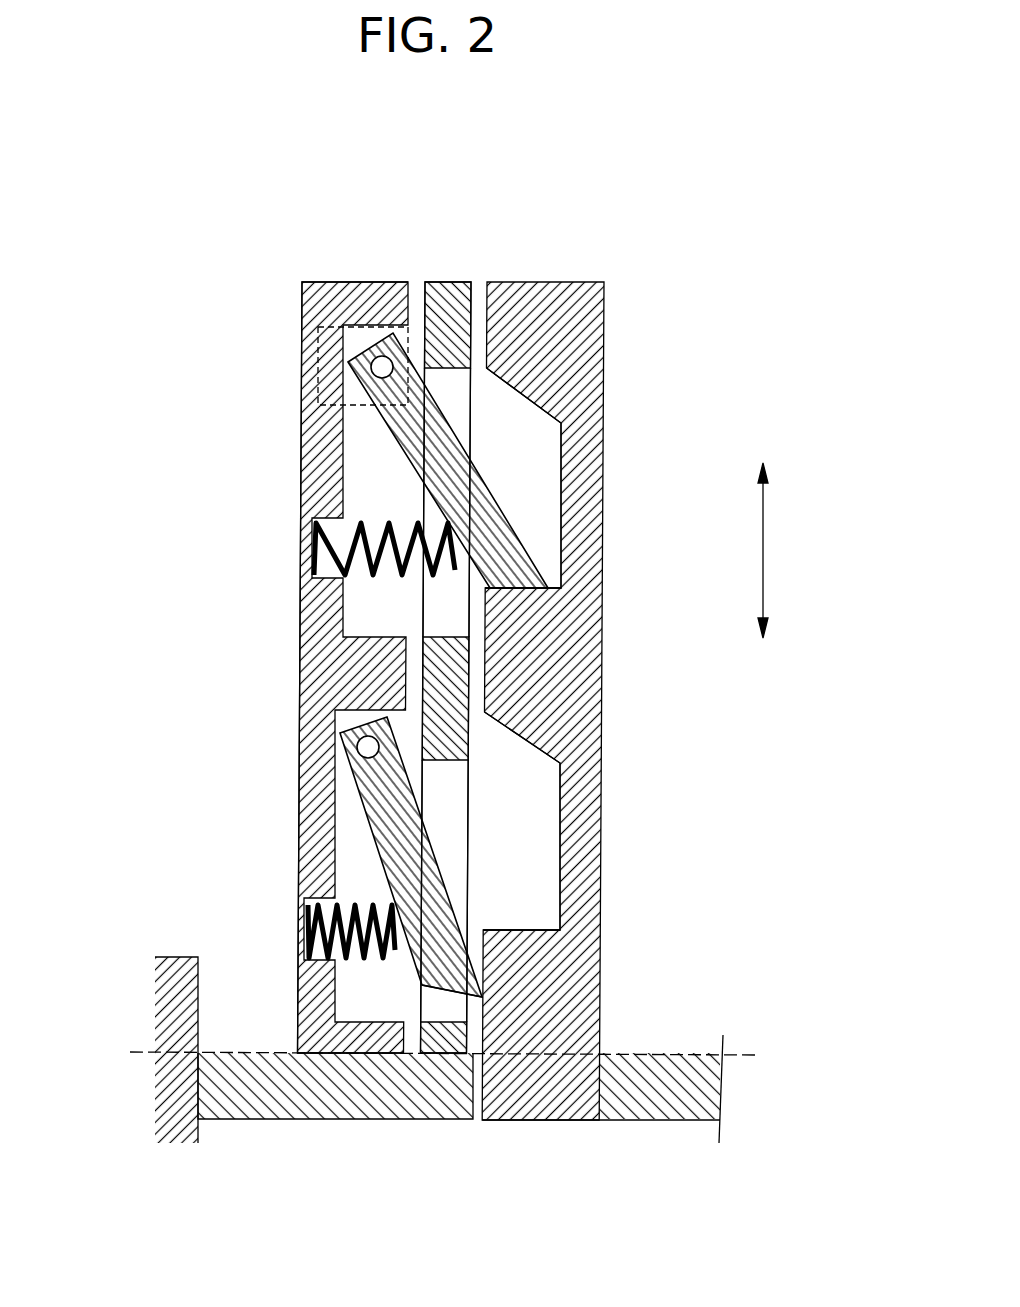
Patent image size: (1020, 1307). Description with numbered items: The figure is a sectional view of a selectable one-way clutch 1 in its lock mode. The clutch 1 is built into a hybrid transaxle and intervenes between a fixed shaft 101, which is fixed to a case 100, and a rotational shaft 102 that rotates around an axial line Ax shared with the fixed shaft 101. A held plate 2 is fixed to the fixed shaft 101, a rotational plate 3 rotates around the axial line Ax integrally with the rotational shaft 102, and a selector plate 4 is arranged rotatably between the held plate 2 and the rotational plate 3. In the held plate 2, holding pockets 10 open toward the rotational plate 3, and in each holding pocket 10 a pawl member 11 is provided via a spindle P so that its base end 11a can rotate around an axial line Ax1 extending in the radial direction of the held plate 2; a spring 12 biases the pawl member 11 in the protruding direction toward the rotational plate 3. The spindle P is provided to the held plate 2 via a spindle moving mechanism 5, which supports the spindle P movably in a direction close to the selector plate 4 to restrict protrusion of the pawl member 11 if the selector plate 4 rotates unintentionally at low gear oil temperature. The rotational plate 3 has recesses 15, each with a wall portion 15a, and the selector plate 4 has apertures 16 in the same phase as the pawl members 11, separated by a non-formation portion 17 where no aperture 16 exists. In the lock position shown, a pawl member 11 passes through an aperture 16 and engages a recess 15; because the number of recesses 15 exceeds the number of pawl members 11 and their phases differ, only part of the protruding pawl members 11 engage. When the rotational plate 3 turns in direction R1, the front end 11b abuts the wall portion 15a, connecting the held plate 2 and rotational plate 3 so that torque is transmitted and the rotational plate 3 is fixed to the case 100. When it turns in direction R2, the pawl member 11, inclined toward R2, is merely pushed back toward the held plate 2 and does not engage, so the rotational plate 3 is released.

The selectable one-way clutch 1 is at (612, 205).
The held plate 2 is at (310, 425).
The rotational plate 3 is at (593, 398).
The selector plate 4 is at (453, 300).
The spindle moving mechanism 5 is at (366, 327).
The holding pocket 10 is at (355, 478).
The pawl member 11 is at (455, 463).
The base end 11a is at (406, 350).
The front end 11b is at (524, 592).
The spring 12 is at (373, 562).
The recess 15 is at (535, 488).
The wall portion 15a is at (542, 590).
The aperture 16 is at (448, 402).
The non-formation portion 17 is at (455, 343).
The case 100 is at (205, 978).
The fixed shaft 101 is at (353, 1097).
The rotational shaft 102 is at (663, 1110).
The axial line Ax is at (142, 1057).
The axial line Ax1 is at (352, 363).
The spindle P is at (383, 380).
The rotational direction R1 is at (766, 522).
The rotational direction R2 is at (766, 648).